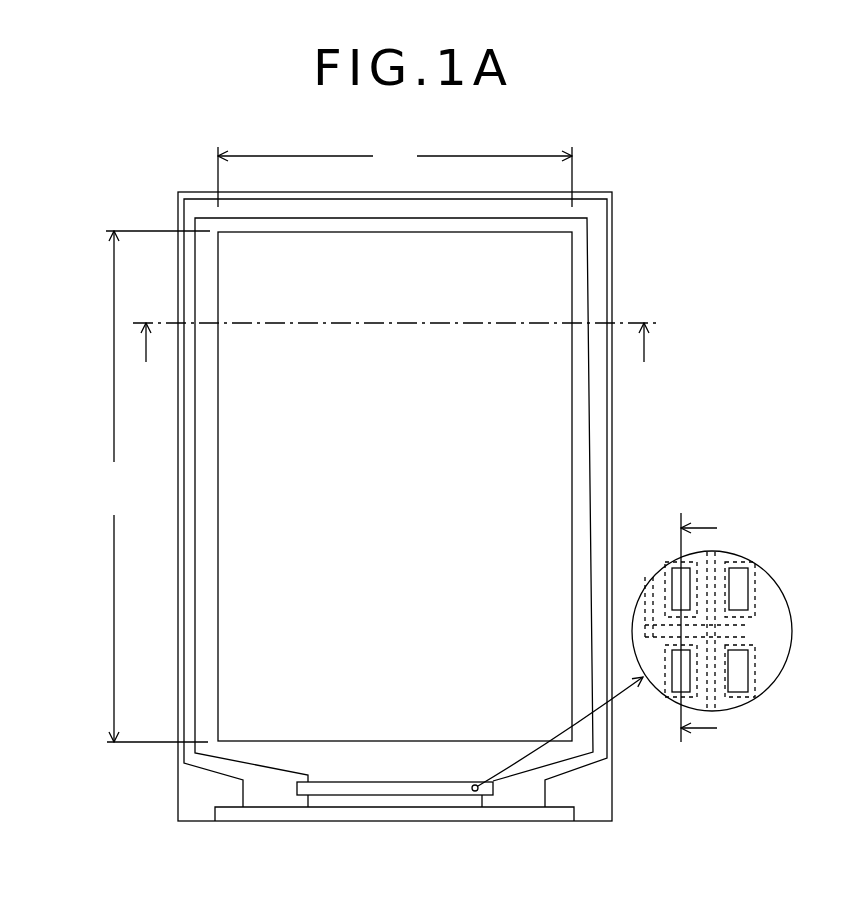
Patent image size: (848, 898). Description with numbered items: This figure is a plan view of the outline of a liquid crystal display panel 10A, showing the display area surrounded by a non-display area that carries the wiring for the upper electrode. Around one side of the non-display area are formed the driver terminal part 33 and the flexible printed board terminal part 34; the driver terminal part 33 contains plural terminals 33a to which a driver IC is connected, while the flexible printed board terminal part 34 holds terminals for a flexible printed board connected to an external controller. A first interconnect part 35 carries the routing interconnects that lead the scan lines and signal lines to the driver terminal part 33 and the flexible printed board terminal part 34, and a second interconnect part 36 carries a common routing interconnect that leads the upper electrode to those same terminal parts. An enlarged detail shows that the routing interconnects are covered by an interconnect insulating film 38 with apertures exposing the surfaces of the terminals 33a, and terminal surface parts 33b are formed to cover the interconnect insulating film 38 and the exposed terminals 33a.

The display device 10A is at (81, 159).
The driver terminal part 33 is at (393, 792).
The terminal 33a is at (678, 583).
The terminal surface part 33b is at (738, 592).
The flexible printed board terminal part 34 is at (557, 813).
The first interconnect part 35 is at (339, 753).
The second interconnect part 36 is at (260, 793).
The interconnect insulating film 38 is at (658, 660).